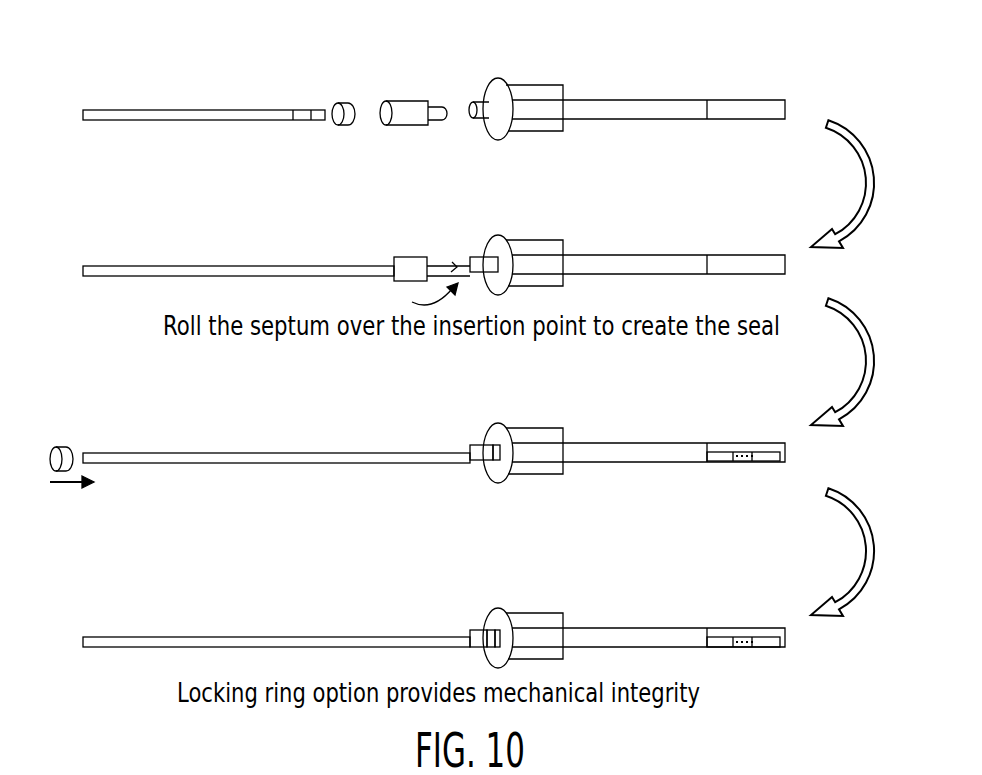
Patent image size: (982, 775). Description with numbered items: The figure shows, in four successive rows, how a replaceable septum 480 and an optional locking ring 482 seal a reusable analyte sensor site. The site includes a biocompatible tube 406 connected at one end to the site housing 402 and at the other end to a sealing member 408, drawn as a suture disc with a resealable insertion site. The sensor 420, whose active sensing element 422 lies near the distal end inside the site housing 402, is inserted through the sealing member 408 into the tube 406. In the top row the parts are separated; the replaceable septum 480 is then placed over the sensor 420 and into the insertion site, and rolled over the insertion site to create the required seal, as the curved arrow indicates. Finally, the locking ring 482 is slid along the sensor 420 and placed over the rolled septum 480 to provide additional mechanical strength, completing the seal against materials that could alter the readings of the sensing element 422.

The site housing 402 is at (746, 105).
The tube 406 is at (624, 105).
The sealing member 408 is at (497, 78).
The sensor 420 is at (213, 108).
The sensing element 422 is at (746, 471).
The replaceable septum 480 is at (410, 106).
The locking ring 482 is at (341, 103).